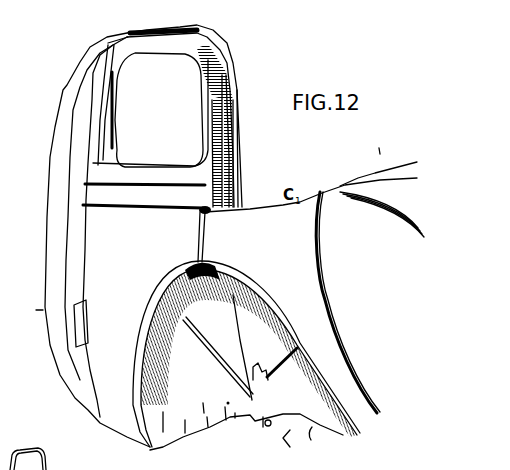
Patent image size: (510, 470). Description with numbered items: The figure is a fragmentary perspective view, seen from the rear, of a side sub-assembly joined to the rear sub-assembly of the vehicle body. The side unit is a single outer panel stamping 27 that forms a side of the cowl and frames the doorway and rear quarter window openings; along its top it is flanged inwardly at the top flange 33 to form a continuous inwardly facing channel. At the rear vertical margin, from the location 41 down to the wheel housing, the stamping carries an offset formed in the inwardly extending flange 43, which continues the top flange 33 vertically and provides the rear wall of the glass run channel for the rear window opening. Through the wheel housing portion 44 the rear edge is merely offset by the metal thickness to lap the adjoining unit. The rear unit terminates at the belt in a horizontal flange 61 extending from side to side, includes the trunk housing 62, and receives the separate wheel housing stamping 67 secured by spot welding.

The outer panel stamping 27 is at (158, 254).
The inwardly turned top flange 33 is at (215, 21).
The location on the rear vertical margin 41 is at (217, 146).
The inwardly extending flange 43 is at (237, 145).
The horizontal flange 61 is at (375, 153).
The trunk housing 62 is at (385, 264).
The wheel housing portion 44 is at (246, 430).
The wheel housing stamping 67 is at (305, 419).